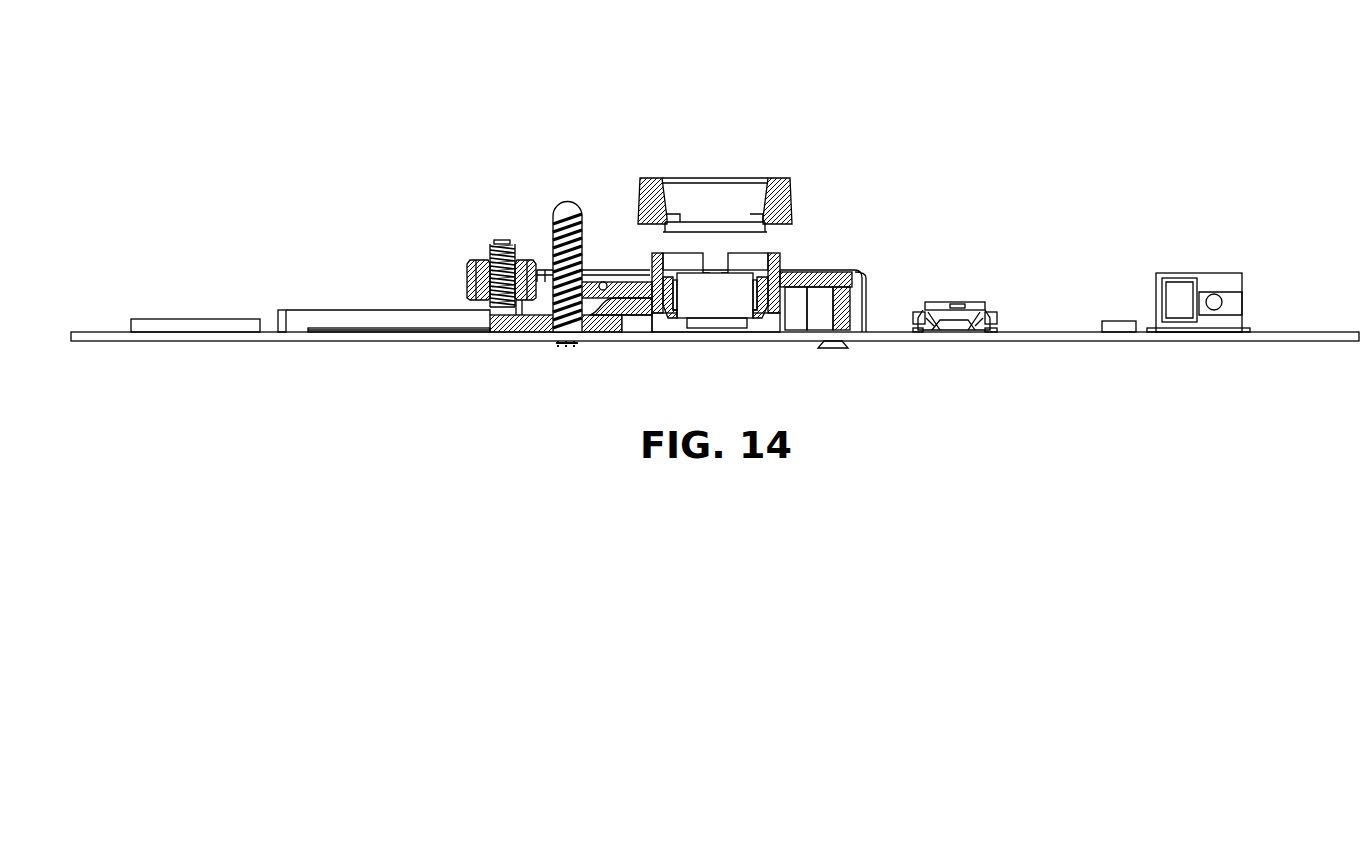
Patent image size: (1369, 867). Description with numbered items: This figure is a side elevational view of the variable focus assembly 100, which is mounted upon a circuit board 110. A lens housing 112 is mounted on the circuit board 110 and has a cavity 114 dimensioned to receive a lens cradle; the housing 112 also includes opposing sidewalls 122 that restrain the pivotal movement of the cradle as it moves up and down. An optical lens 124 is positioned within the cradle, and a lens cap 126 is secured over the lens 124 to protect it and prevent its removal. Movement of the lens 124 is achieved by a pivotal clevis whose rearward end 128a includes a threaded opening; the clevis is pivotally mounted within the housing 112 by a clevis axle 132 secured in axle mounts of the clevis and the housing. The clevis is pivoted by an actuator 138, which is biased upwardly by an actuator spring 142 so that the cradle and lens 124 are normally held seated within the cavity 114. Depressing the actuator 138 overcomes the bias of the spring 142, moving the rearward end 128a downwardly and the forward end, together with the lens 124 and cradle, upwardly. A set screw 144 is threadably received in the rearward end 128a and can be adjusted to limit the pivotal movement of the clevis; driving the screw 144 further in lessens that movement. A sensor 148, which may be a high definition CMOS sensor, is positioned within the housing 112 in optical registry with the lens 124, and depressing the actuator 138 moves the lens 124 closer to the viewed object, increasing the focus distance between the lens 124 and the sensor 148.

The variable focus assembly 100 is at (715, 253).
The circuit board 110 is at (958, 337).
The lens housing 112 is at (835, 265).
The cavity 114 is at (718, 266).
The sidewalls 122 is at (665, 305).
The optical lens 124 is at (737, 307).
The lens cap 126 is at (757, 205).
The rearward end of clevis 128a is at (467, 284).
The clevis axle 132 is at (603, 282).
The actuator 138 is at (565, 208).
The actuator spring 142 is at (566, 343).
The set screw 144 is at (490, 240).
The sensor 148 is at (712, 326).